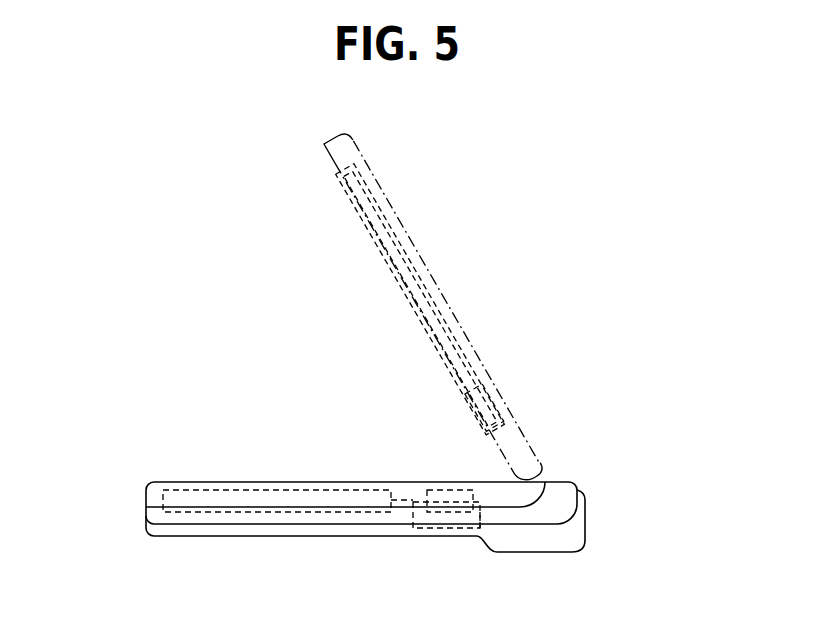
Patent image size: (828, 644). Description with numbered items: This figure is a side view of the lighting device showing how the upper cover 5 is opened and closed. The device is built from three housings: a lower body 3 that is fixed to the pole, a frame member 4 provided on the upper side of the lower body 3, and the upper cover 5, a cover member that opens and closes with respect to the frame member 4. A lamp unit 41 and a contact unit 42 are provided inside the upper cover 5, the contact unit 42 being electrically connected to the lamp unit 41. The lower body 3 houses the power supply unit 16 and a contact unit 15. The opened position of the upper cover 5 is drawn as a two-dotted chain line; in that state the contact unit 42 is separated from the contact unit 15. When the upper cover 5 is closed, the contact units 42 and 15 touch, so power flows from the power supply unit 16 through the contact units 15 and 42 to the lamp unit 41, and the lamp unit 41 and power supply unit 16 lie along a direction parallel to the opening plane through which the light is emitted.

The lower body 3 is at (585, 522).
The frame member 4 is at (565, 481).
The upper cover 5 is at (510, 413).
The contact unit 15 is at (479, 530).
The power supply unit 16 is at (411, 518).
The lamp unit 41 is at (185, 491).
The contact unit 42 is at (455, 490).